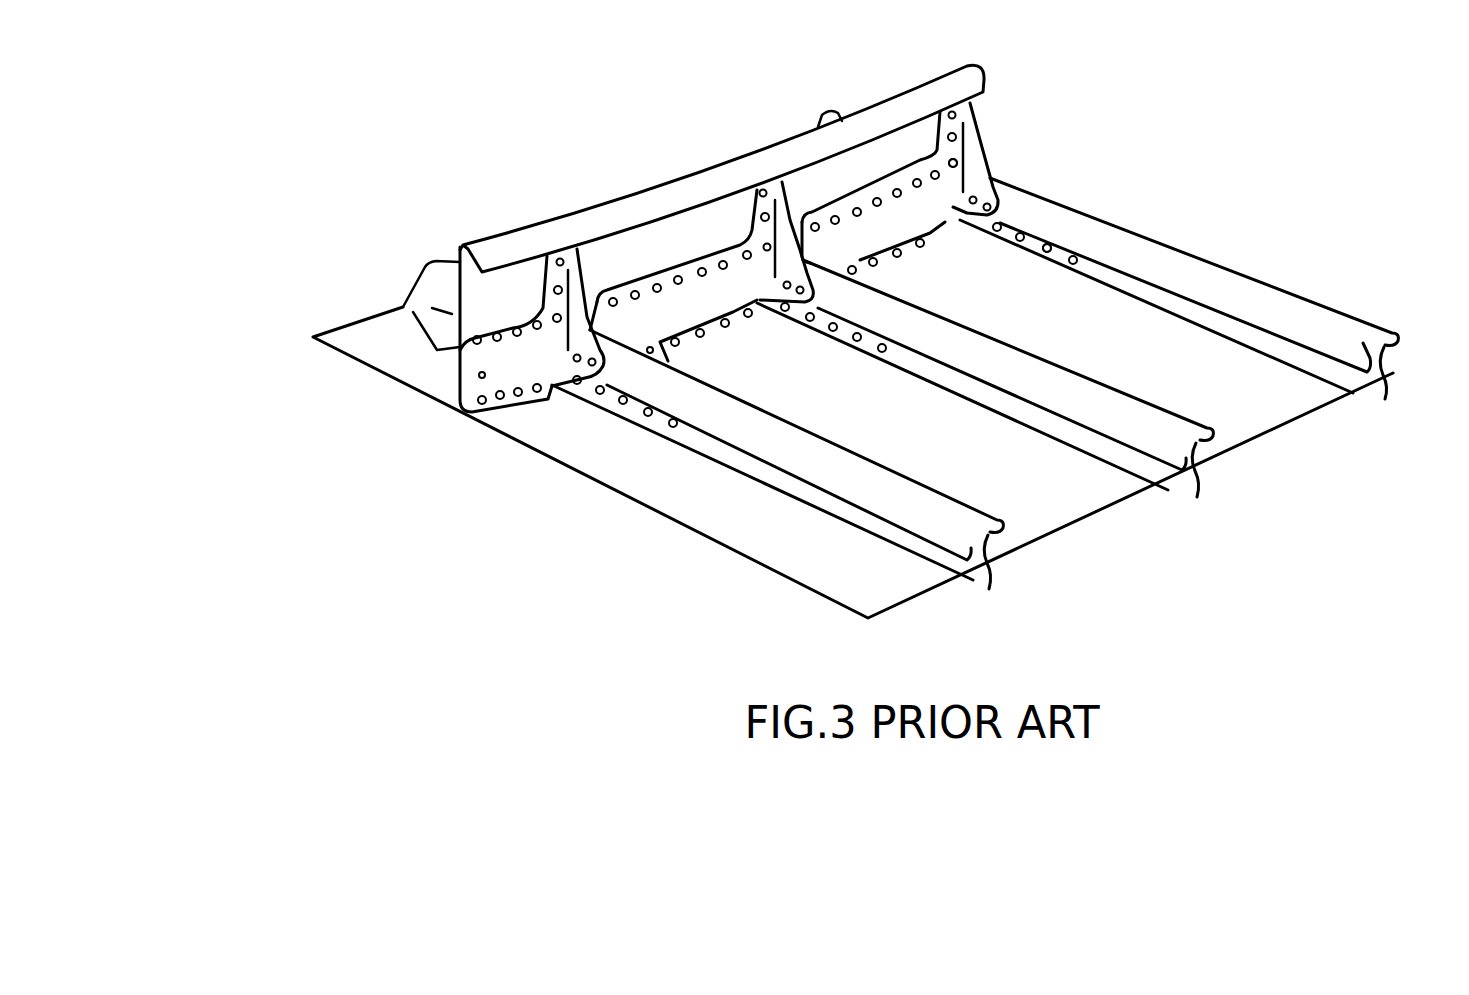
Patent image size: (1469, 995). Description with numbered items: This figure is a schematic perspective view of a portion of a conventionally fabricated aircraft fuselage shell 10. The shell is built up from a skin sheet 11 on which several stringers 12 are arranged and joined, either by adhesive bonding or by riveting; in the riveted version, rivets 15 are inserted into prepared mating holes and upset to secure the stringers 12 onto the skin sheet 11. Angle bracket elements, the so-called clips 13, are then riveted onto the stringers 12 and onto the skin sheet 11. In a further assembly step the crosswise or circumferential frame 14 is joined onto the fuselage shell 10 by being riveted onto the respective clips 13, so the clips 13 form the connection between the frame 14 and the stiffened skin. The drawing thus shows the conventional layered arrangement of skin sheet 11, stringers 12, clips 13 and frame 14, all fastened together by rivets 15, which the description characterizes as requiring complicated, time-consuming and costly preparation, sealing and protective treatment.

The aircraft fuselage shell 10 is at (272, 230).
The skin sheet 11 is at (1278, 420).
The stringers 12 is at (983, 560).
The clips 13 is at (473, 371).
The frame 14 is at (957, 85).
The rivets 15 is at (962, 160).